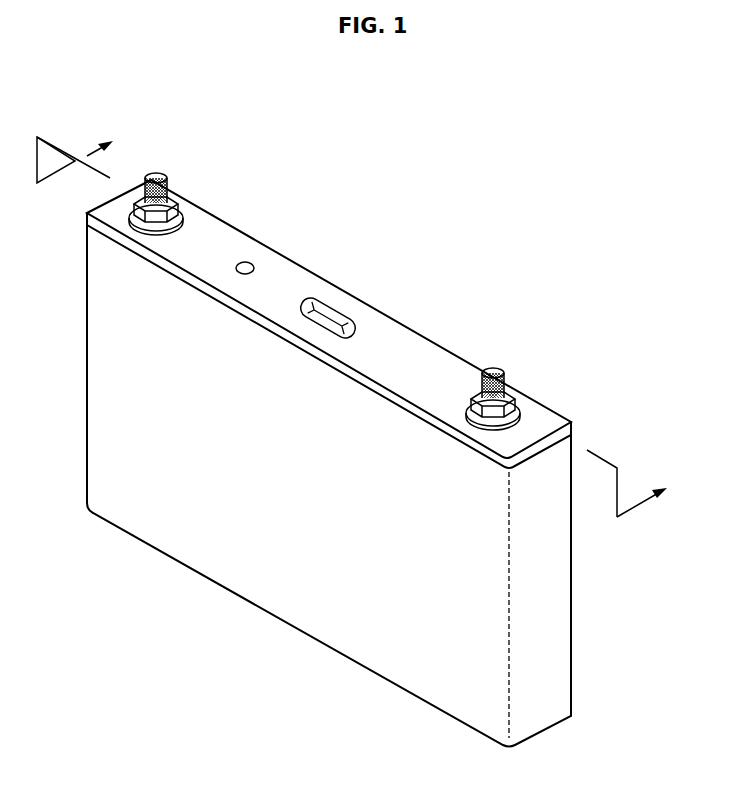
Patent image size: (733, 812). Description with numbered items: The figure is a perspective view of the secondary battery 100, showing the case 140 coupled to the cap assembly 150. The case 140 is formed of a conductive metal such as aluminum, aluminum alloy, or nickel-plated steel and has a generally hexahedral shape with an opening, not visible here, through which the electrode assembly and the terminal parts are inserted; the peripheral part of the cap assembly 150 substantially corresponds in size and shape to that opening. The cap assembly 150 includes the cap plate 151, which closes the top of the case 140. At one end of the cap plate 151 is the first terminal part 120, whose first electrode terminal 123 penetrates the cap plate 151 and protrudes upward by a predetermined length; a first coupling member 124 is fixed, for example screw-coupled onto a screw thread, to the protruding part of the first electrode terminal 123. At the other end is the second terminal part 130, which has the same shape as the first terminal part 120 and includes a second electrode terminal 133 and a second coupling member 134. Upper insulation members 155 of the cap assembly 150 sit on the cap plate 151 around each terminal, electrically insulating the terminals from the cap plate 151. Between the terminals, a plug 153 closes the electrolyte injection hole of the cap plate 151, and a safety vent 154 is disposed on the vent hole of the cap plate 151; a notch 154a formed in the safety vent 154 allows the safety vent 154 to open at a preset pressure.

The secondary battery 100 is at (67, 73).
The first terminal part 120 is at (159, 171).
The first electrode terminal 123 is at (153, 173).
The first coupling member 124 is at (170, 204).
The second terminal part 130 is at (498, 364).
The second electrode terminal 133 is at (492, 368).
The second coupling member 134 is at (507, 398).
The case 140 is at (280, 603).
The cap assembly 150 is at (283, 267).
The cap plate 151 is at (392, 333).
The plug 153 is at (246, 262).
The safety vent 154 is at (328, 308).
The notch 154a is at (338, 322).
The upper insulation members 155 is at (185, 212).